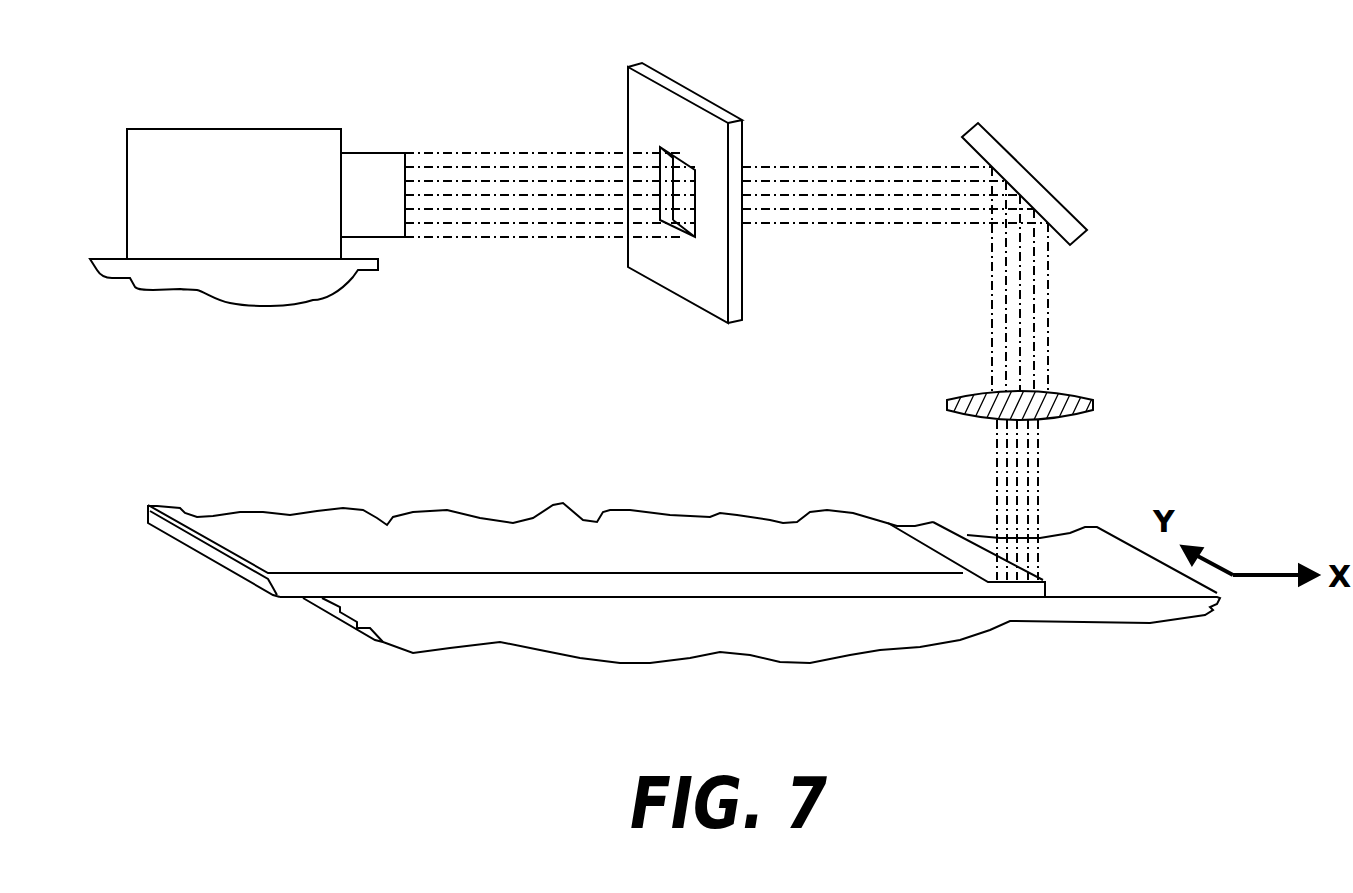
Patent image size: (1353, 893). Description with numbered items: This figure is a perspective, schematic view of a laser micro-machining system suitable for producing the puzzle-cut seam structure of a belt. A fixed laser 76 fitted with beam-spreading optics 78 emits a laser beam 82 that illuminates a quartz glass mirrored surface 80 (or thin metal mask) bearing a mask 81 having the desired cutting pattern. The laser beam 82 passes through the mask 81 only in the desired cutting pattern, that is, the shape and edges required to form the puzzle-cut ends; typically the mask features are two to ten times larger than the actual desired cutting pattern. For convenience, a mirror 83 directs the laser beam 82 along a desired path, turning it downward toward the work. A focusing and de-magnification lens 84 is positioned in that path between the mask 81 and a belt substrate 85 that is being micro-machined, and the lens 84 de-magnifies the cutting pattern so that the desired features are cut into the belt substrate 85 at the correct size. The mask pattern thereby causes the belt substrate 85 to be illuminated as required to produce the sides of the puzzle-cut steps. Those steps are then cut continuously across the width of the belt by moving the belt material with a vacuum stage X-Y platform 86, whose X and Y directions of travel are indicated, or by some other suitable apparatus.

The fixed laser 76 is at (243, 129).
The beam-spreading optics 78 is at (378, 153).
The quartz glass mirrored surface 80 is at (696, 96).
The mask 81 is at (695, 237).
The laser beam 82 is at (513, 150).
The mirror 83 is at (1037, 178).
The focusing and de-magnification lens 84 is at (1090, 397).
The belt substrate 85 is at (782, 525).
The vacuum stage X-Y platform 86 is at (1147, 624).